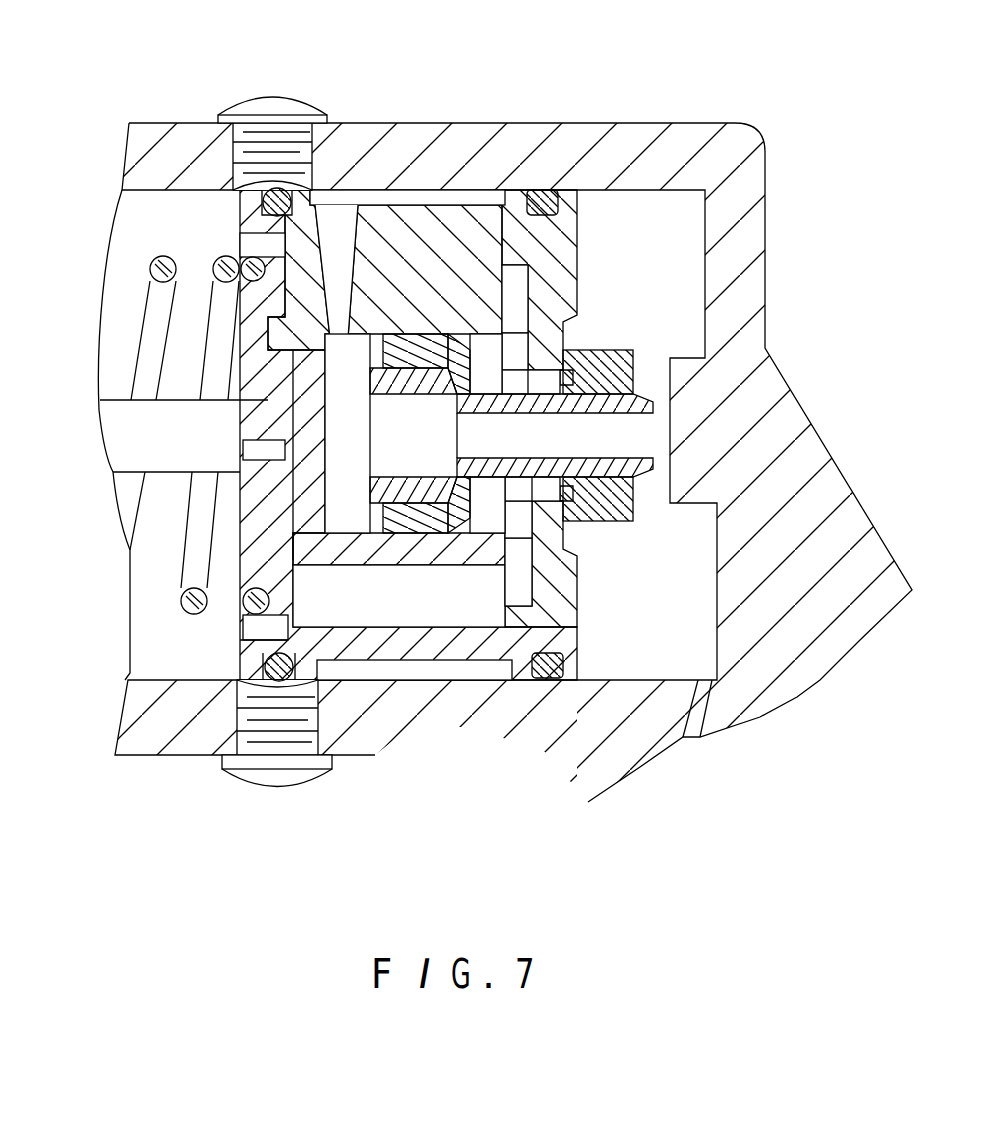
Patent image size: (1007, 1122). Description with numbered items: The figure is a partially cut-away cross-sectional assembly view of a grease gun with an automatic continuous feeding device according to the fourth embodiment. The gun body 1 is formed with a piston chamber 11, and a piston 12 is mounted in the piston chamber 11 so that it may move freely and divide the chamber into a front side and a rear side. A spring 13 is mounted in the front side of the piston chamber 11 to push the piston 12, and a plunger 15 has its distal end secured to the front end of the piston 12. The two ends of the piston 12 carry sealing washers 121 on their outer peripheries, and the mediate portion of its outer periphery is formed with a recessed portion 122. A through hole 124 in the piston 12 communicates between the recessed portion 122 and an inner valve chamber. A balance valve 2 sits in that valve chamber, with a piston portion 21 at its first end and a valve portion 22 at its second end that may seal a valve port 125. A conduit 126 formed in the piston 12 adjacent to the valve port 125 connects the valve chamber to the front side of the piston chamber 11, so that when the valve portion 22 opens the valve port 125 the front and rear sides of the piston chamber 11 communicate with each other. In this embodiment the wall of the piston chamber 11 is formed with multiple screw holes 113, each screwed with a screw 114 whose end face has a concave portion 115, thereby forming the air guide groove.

The gun body 1 is at (513, 418).
The piston chamber 11 is at (645, 203).
The piston 12 is at (447, 213).
The spring 13 is at (152, 262).
The plunger 15 is at (120, 422).
The balance valve 2 is at (592, 403).
The piston portion 21 is at (373, 545).
The valve portion 22 is at (620, 507).
The screw holes 113 is at (233, 163).
The screw 114 is at (255, 116).
The concave portion 115 is at (257, 191).
The sealing washers 121 is at (547, 187).
The recessed portion 122 is at (402, 193).
The through hole 124 is at (337, 217).
The valve port 125 is at (547, 485).
The conduit 126 is at (407, 620).